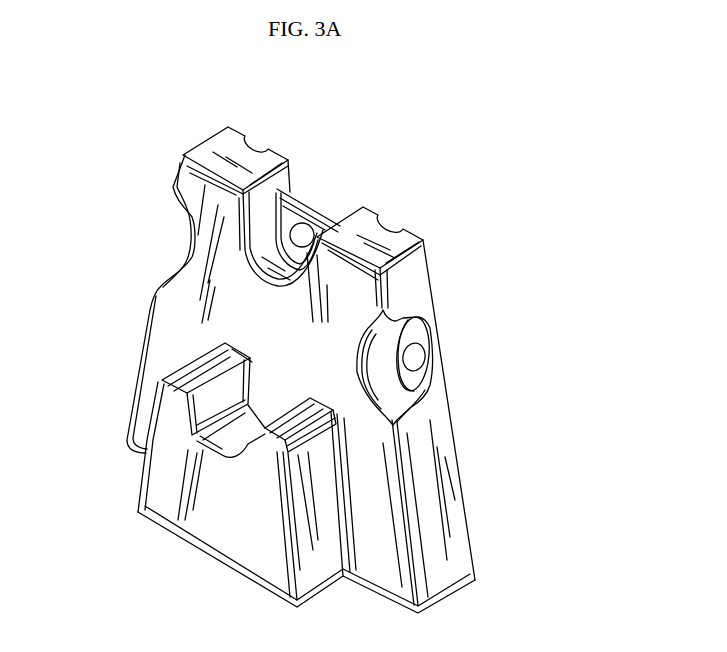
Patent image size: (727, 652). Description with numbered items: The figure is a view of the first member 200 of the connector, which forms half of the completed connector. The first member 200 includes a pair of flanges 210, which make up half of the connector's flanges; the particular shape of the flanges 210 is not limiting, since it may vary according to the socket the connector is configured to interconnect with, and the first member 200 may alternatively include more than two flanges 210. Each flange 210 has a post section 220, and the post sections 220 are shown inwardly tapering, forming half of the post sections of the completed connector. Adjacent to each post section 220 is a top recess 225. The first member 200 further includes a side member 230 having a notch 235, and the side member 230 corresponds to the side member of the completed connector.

The first member 200 is at (489, 174).
The flange 210 is at (165, 340).
The post section 220 is at (207, 157).
The top recess 225 is at (321, 187).
The side member 230 is at (232, 537).
The notch 235 is at (208, 460).